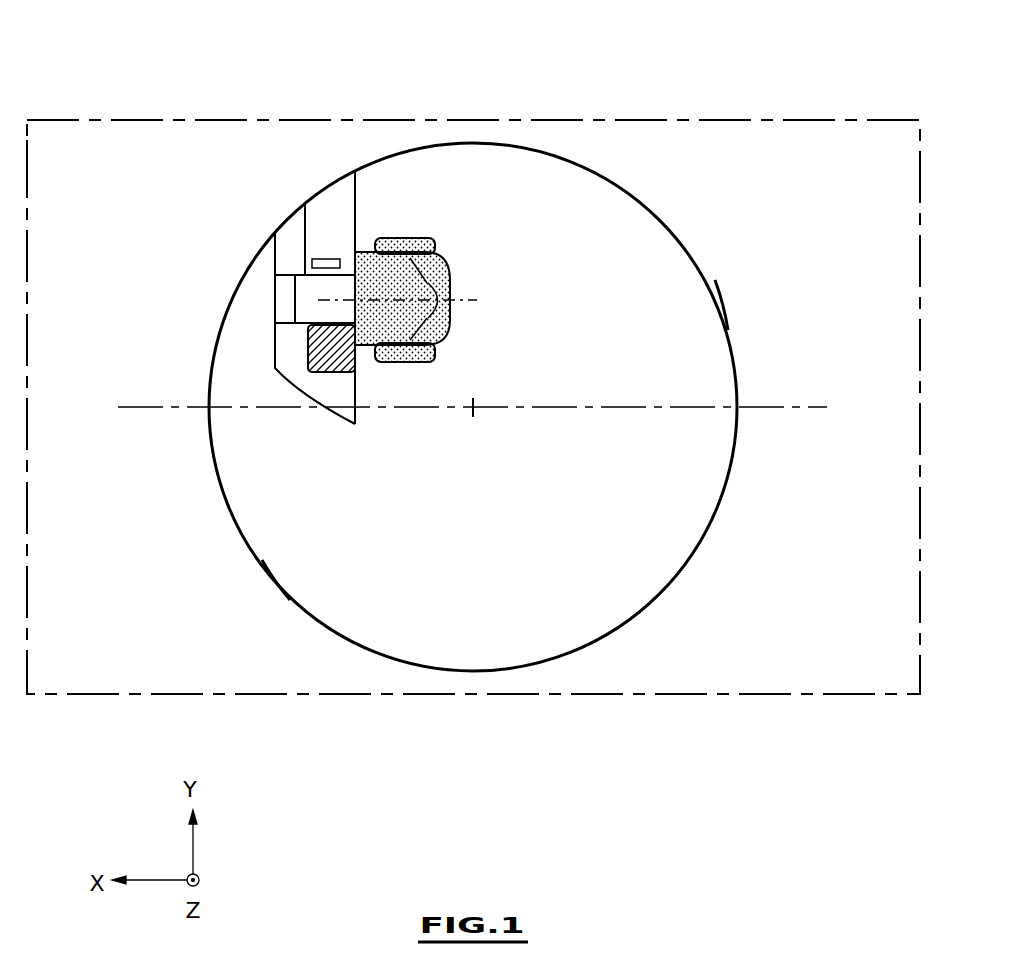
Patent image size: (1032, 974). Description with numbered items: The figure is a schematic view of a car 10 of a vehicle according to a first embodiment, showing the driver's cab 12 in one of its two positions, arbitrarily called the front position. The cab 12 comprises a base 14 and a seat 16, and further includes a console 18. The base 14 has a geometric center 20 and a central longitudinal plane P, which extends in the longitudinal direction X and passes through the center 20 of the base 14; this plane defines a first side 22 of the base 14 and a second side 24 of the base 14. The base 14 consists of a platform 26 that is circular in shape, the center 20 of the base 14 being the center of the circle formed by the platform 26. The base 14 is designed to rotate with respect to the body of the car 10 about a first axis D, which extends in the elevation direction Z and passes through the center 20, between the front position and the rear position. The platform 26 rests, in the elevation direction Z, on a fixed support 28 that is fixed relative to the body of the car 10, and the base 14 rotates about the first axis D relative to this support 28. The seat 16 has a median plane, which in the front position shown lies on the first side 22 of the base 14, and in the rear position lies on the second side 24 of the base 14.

The car 10 is at (565, 119).
The driver's cab 12 is at (651, 203).
The base 14 is at (702, 317).
The seat 16 is at (407, 240).
The console 18 is at (333, 205).
The center 20 is at (477, 408).
The first side 22 is at (252, 292).
The second side 24 is at (308, 560).
The platform 26 is at (220, 323).
The fixed support 28 is at (163, 377).